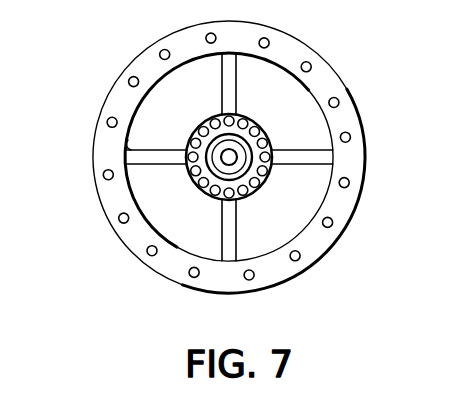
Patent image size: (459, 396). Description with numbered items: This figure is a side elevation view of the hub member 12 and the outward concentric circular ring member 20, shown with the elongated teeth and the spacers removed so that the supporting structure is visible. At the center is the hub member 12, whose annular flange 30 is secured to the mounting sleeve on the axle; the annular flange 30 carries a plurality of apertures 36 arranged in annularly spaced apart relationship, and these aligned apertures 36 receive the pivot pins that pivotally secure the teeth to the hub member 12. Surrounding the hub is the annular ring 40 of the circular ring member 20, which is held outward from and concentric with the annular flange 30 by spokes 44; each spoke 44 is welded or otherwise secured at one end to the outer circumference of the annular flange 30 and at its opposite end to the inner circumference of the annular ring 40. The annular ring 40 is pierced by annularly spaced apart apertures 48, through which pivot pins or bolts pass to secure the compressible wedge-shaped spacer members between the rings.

The circular ring member 20 is at (349, 118).
The annular ring 40 is at (320, 243).
The apertures 48 is at (270, 42).
The spokes 44 is at (130, 137).
The hub member 12 is at (255, 190).
The annular flange 30 is at (203, 123).
The apertures 36 is at (214, 195).